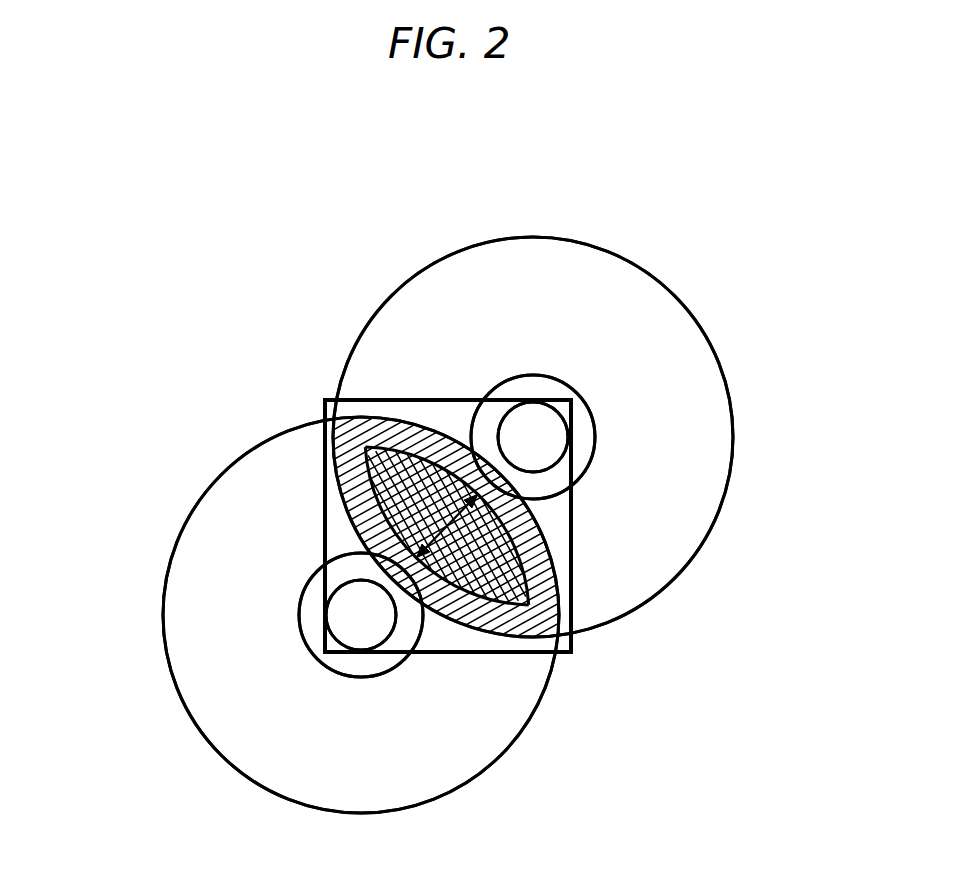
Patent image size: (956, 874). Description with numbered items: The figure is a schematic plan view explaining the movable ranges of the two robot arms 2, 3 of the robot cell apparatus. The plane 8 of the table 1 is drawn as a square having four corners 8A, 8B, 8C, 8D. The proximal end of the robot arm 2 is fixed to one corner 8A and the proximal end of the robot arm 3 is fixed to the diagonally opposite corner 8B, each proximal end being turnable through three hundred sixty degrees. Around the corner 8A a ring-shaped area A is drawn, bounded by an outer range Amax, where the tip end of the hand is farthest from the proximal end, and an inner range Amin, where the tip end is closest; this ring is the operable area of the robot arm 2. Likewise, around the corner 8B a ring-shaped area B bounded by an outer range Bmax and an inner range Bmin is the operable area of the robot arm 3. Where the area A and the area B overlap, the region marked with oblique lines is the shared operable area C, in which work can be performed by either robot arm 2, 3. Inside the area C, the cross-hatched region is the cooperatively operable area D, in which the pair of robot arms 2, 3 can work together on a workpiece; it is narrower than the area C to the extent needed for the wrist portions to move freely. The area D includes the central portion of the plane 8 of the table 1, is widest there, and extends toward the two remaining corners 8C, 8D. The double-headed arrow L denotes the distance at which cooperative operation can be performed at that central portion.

The table 1 is at (420, 400).
The robot arm 2 is at (399, 617).
The robot arm 3 is at (498, 422).
The plane 8 is at (557, 517).
The corner 8A is at (333, 645).
The corner 8B is at (562, 420).
The corner 8C is at (337, 403).
The corner 8D is at (563, 641).
The area A is at (433, 764).
The range Amax is at (192, 723).
The range Amin is at (298, 618).
The area B is at (615, 590).
The range Bmax is at (733, 442).
The range Bmin is at (597, 428).
The area C is at (553, 617).
The area D is at (372, 477).
The distance L is at (443, 541).